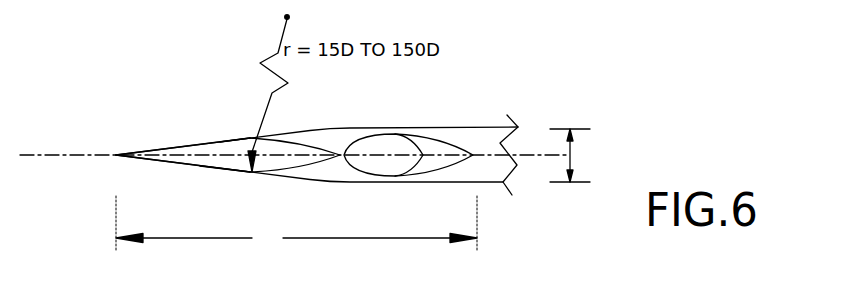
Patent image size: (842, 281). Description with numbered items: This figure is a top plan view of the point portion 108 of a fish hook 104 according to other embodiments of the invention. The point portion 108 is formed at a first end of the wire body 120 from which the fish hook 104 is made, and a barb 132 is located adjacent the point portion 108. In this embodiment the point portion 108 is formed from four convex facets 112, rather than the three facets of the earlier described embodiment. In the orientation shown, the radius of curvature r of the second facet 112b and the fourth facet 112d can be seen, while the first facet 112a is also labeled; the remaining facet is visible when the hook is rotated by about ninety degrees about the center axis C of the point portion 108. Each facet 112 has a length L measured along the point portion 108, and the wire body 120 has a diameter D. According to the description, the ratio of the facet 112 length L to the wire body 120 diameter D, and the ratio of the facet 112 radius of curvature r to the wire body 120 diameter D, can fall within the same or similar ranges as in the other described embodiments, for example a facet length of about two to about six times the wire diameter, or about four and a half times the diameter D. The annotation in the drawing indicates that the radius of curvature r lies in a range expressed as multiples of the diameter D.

The fish hook 104 is at (475, 135).
The point portion 108 is at (227, 169).
The convex facets 112 is at (290, 152).
The first convex facet 112a is at (199, 152).
The second facet 112b is at (168, 164).
The fourth facet 112d is at (241, 152).
The wire body 120 is at (486, 183).
The barb 132 is at (401, 148).
The center axis C is at (88, 157).
The diameter D is at (573, 155).
The length L is at (296, 225).